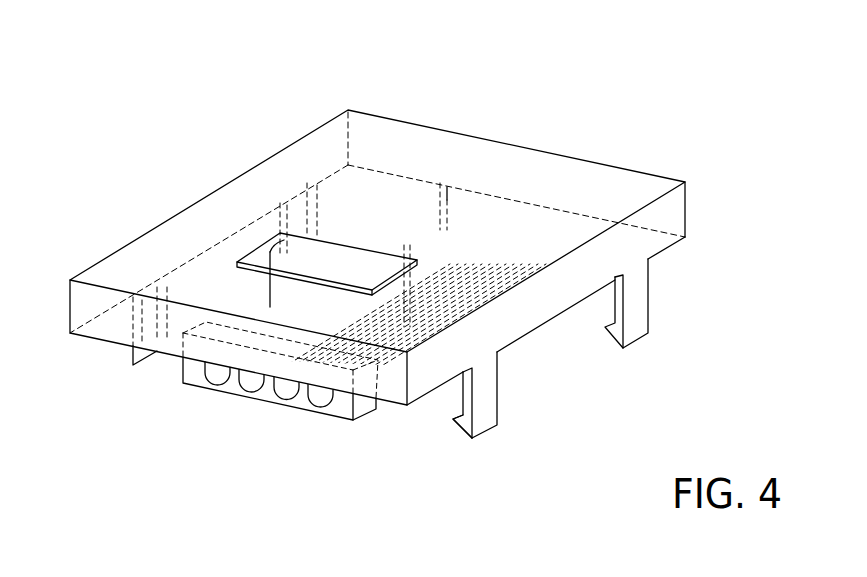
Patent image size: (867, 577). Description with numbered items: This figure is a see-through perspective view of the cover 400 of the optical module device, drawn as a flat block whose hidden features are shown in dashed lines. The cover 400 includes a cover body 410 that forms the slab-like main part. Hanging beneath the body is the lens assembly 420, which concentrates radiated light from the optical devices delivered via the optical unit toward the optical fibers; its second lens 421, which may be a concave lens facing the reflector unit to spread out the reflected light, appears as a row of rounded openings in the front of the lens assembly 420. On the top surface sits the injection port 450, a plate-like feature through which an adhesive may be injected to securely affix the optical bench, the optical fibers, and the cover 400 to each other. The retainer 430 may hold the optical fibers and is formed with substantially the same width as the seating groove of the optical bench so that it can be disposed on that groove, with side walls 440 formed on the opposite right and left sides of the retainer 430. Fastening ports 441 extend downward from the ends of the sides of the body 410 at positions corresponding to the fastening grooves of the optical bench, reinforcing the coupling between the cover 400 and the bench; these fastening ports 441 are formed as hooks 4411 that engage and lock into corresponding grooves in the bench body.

The cover 400 is at (110, 57).
The cover body 410 is at (471, 137).
The lens assembly 420 is at (203, 390).
The second lens 421 is at (253, 388).
The retainer 430 is at (362, 322).
The side walls 440 is at (542, 307).
The fastening ports 441 is at (487, 400).
The hooks 4411 is at (452, 421).
The injection port 450 is at (300, 250).